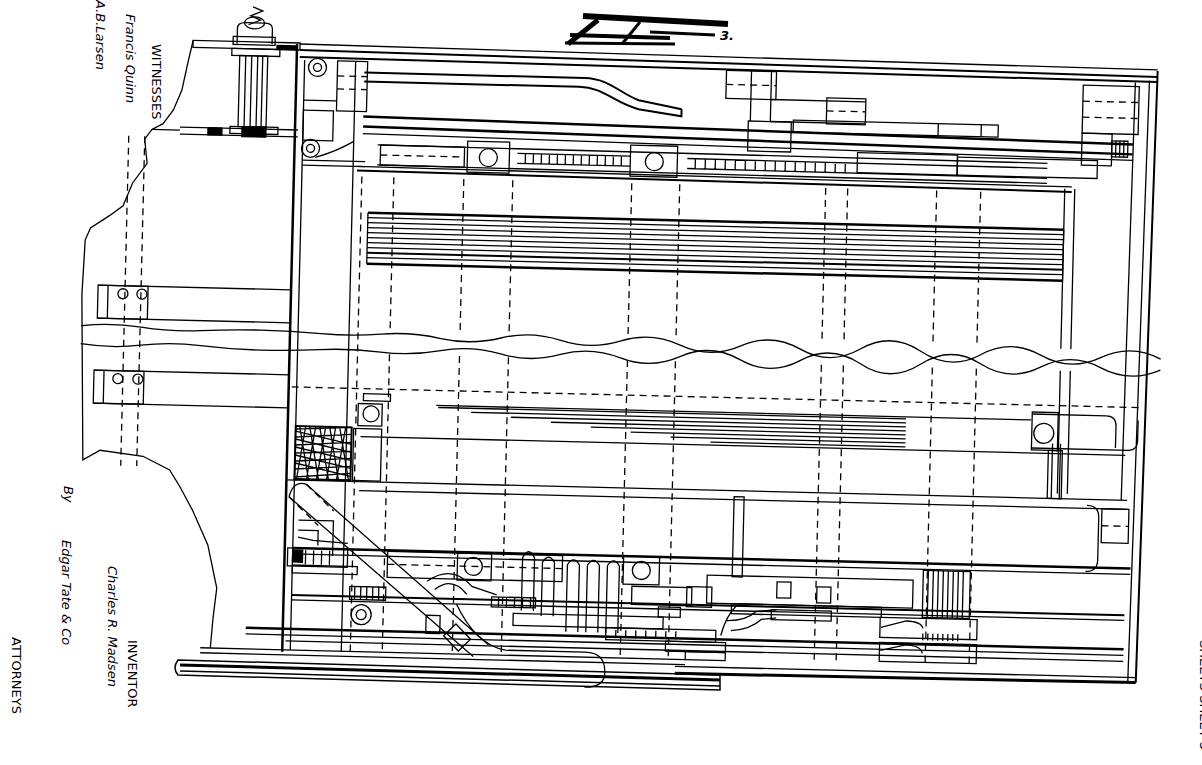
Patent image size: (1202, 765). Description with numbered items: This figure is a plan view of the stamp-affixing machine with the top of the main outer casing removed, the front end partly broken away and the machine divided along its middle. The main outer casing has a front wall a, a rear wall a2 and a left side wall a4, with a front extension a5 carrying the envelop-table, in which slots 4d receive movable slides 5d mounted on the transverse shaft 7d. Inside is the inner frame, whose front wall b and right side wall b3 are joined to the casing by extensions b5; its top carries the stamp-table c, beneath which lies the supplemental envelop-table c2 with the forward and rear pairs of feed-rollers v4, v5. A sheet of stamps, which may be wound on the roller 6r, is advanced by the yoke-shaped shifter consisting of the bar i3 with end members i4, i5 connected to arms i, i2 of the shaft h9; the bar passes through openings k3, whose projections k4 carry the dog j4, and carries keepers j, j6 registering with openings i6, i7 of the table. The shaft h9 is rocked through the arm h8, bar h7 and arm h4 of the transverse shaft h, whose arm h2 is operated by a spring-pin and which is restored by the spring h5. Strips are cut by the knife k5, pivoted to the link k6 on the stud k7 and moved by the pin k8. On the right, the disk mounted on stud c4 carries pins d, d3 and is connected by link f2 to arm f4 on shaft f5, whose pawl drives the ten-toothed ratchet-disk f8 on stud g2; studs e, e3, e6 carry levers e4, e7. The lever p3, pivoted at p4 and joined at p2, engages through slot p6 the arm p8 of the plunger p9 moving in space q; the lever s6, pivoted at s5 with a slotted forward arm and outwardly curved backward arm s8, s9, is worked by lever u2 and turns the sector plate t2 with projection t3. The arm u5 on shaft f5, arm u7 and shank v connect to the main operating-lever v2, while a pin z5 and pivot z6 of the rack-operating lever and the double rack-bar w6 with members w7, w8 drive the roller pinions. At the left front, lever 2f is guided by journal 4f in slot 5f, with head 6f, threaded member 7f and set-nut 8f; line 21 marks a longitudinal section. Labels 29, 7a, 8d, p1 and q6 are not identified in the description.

The rear end plate or wall a2 is at (1155, 301).
The left side plate or wall a4 is at (470, 56).
The extension a5 is at (130, 210).
The front end plate or wall a is at (305, 450).
The lever 2f is at (217, 138).
The journal 4f is at (240, 78).
The slot 5f is at (290, 45).
The head 6f is at (258, 140).
The screw-threaded member 7f is at (268, 14).
The set-nut 8f is at (247, 30).
The broken plate 29 is at (152, 135).
The pivot 7a is at (326, 354).
The arm i is at (368, 96).
The side wall extension b5 is at (318, 168).
The front end member i4 is at (356, 270).
The front end plate or wall b is at (360, 296).
The shaft h is at (875, 196).
The vertically-arranged bar h7 is at (727, 78).
The arm h8 is at (750, 118).
The arm h4 is at (800, 82).
The pin z5 is at (950, 106).
The shaft h9 is at (470, 114).
The roller 6r is at (570, 213).
The arm i2 is at (1100, 146).
The rear end member i5 is at (1134, 241).
The stamp-table c is at (681, 420).
The forward pair of rollers v4 is at (516, 318).
The rear pair of rollers v5 is at (683, 302).
The upwardly-directed arm h2 is at (1092, 304).
The slots or openings 4d is at (215, 288).
The movable slides 5d is at (160, 280).
The holes 8d is at (129, 293).
The shaft 7d is at (152, 205).
The longitudinal bar i3 is at (716, 418).
The opening i7 is at (743, 419).
The opening i6 is at (399, 395).
The keeper j6 is at (391, 418).
The link k6 is at (391, 455).
The openings k3 is at (362, 395).
The projections k4 is at (360, 425).
The keeper j is at (1043, 432).
The dog j4 is at (1058, 452).
The section line 21 is at (1148, 384).
The shaft f5 is at (984, 315).
The cutter or knife k5 is at (735, 488).
The pin k8 is at (755, 520).
The stud k7 is at (1123, 525).
The spring h5 is at (1000, 546).
The stud g2 is at (820, 565).
The arm f4 is at (895, 610).
The ratchet-disk f8 is at (779, 625).
The link member f2 is at (745, 610).
The spring-operated pin d is at (699, 600).
The lever u2 is at (677, 599).
The spring-operated pin d3 is at (685, 646).
The main operating-lever v2 is at (495, 650).
The lever p3 is at (432, 600).
The bar end p1 is at (300, 500).
The arm p8 is at (310, 520).
The slot p6 is at (310, 532).
The plunger p9 is at (312, 540).
The projection t3 is at (305, 556).
The plate t2 is at (305, 568).
The lever s6 is at (336, 586).
The pivot p4 is at (462, 585).
The outwardly curved portion s9 is at (530, 578).
The pivot s5 is at (486, 545).
The supplemental envelop-table c2 is at (450, 630).
The stud e is at (526, 573).
The pivot point z6 is at (589, 579).
The stud c4 is at (582, 582).
The stud e6 is at (610, 582).
The arm u5 is at (633, 585).
The stud e3 is at (700, 545).
The right side plate or wall b3 is at (662, 567).
The vertical space q is at (297, 486).
The link q6 is at (530, 654).
The pivotal connection p2 is at (450, 600).
The shank v is at (560, 620).
The bottom member w8 is at (565, 645).
The arm u7 is at (620, 640).
The short lever e7 is at (640, 620).
The backwardly-directed arm s8 is at (680, 632).
The lever e4 is at (712, 630).
The top member w7 is at (740, 642).
The double rack-bar w6 is at (745, 648).